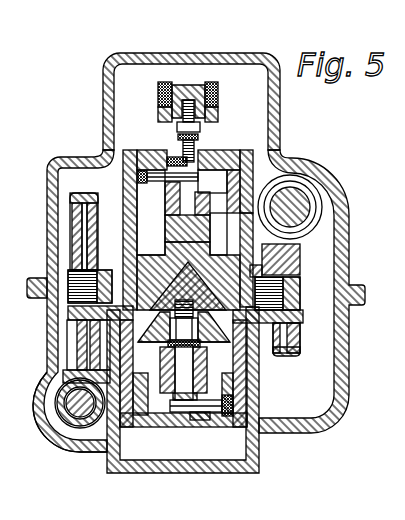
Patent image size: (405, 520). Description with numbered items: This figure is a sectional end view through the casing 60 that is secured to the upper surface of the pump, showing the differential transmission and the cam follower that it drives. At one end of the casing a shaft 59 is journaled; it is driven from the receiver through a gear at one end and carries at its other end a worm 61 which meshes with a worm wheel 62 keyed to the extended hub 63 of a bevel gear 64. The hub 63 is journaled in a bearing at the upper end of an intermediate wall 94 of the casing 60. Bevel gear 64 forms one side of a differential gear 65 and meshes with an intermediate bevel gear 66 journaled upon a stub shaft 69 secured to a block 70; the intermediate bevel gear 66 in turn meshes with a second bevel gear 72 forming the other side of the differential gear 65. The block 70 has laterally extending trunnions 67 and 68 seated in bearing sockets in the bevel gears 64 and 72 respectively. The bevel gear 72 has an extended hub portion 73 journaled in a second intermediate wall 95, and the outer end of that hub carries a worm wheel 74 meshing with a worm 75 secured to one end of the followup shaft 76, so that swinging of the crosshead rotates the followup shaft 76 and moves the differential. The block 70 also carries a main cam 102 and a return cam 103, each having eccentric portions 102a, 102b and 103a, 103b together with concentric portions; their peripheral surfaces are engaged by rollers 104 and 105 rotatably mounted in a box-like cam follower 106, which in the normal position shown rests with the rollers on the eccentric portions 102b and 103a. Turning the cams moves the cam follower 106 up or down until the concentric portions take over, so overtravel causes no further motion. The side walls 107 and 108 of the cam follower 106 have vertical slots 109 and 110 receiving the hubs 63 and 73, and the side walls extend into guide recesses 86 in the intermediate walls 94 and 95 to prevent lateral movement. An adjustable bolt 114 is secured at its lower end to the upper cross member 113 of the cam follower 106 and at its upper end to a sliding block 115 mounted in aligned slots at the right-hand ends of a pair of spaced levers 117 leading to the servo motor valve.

The shaft 59 is at (78, 410).
The casing 60 is at (346, 230).
The worm 61 is at (82, 432).
The worm wheel 62 is at (53, 207).
The extended hub 63 is at (90, 268).
The bevel gear 64 is at (93, 212).
The differential gear 65 is at (245, 102).
The intermediate bevel gear 66 is at (166, 343).
The trunnion 67 is at (55, 272).
The trunnion 68 is at (246, 243).
The stub shaft 69 is at (201, 348).
The block 70 is at (163, 276).
The second bevel gear 72 is at (246, 353).
The extended hub portion 73 is at (285, 290).
The worm wheel 74 is at (297, 253).
The worm 75 is at (312, 198).
The followup shaft 76 is at (313, 210).
The guide recesses 86 is at (78, 326).
The intermediate wall 94 is at (110, 352).
The second intermediate wall 95 is at (262, 390).
The main cam 102 is at (159, 208).
The eccentric portion 102a is at (183, 388).
The eccentric portion 102b is at (125, 182).
The return cam 103 is at (207, 227).
The eccentric portion 103a is at (208, 405).
The eccentric portion 103b is at (250, 157).
The roller 104 is at (172, 163).
The roller 105 is at (201, 417).
The cam follower 106 is at (218, 160).
The side wall 107 is at (125, 197).
The side wall 108 is at (198, 190).
The vertical slot 109 is at (136, 300).
The vertical slot 110 is at (298, 276).
The upper cross member 113 is at (216, 153).
The adjustable bolt 114 is at (172, 113).
The sliding block 115 is at (182, 83).
The levers 117 is at (163, 82).